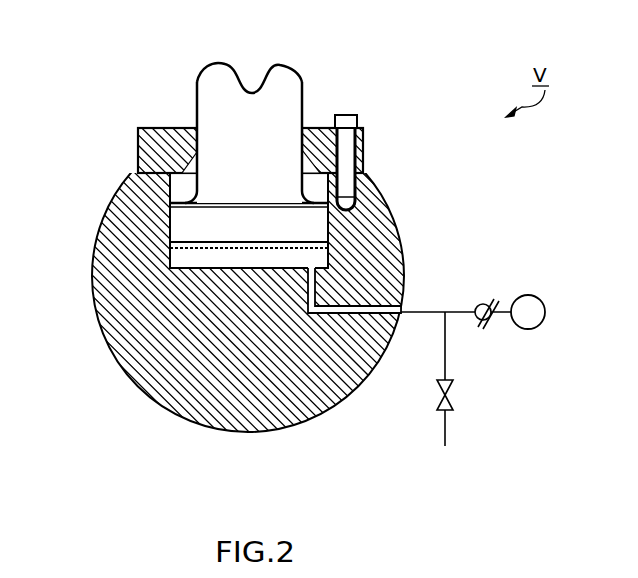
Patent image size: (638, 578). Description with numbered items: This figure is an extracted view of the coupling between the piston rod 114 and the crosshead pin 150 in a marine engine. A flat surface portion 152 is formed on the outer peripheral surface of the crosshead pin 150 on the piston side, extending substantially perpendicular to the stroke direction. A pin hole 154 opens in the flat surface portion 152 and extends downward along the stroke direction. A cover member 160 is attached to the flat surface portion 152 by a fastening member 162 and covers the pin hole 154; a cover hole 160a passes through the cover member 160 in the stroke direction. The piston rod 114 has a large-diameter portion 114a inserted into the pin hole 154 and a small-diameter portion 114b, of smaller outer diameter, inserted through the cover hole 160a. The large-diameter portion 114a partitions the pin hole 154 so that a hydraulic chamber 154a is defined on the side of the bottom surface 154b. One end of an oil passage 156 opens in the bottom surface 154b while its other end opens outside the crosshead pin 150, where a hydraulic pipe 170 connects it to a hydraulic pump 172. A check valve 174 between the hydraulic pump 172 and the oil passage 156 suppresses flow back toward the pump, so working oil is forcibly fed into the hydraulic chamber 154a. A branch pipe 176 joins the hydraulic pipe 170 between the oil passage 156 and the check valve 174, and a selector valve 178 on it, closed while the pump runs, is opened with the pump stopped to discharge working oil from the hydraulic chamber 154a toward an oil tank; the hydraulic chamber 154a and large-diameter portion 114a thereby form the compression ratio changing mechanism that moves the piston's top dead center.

The piston rod 114 is at (195, 80).
The large-diameter portion 114a is at (190, 228).
The small-diameter portion 114b is at (235, 98).
The crosshead pin 150 is at (100, 333).
The flat surface portion 152 is at (137, 157).
The pin hole 154 is at (174, 261).
The hydraulic chamber 154a is at (255, 262).
The bottom surface 154b is at (205, 268).
The oil passage 156 is at (332, 313).
The cover member 160 is at (137, 128).
The cover hole 160a is at (301, 165).
The fastening member 162 is at (350, 116).
The hydraulic pipe 170 is at (433, 310).
The hydraulic pump 172 is at (536, 297).
The check valve 174 is at (489, 301).
The branch pipe 176 is at (448, 350).
The selector valve 178 is at (445, 414).